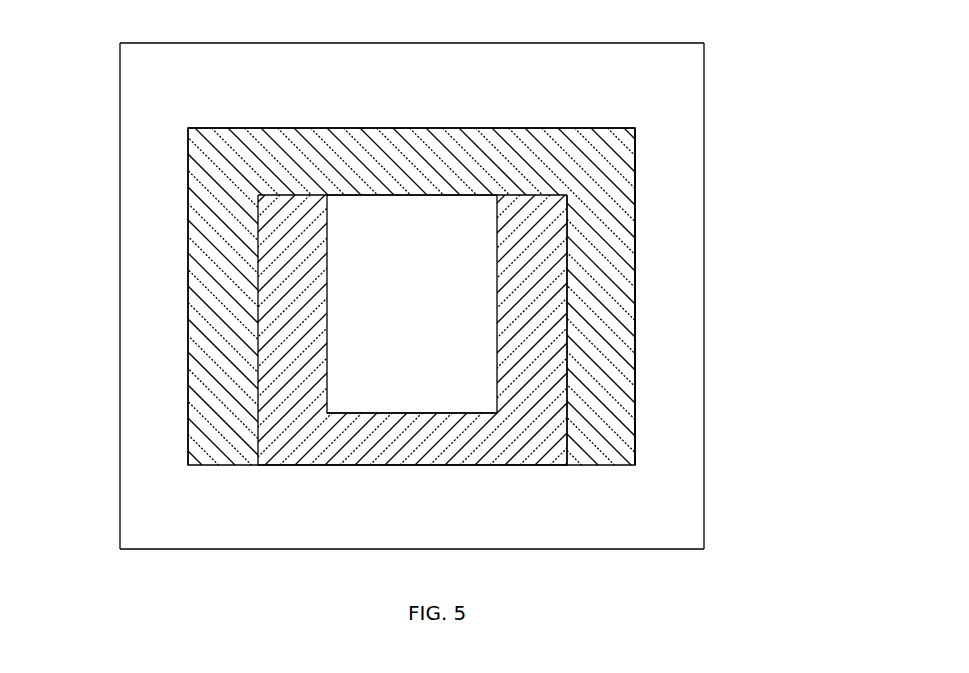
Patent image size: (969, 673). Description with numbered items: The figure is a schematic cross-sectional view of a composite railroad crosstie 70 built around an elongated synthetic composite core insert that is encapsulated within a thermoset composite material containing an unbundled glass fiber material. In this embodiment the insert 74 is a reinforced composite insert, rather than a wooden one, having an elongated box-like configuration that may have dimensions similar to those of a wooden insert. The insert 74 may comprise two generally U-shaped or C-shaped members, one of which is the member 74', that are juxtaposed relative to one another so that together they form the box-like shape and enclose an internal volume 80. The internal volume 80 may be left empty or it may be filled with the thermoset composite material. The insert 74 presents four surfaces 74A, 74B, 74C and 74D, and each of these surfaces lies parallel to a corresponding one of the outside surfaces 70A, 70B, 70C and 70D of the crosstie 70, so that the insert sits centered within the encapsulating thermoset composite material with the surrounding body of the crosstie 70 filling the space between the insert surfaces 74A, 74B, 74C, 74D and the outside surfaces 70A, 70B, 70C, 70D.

The composite railroad crosstie 70 is at (633, 30).
The outside surface 70A is at (120, 355).
The outside surface 70B is at (188, 43).
The outside surface 70C is at (704, 530).
The outside surface 70D is at (188, 549).
The insert 74 is at (480, 335).
The surface 74A is at (188, 213).
The surface 74B is at (480, 127).
The surface 74C is at (637, 440).
The surface 74D is at (297, 465).
The U-shaped or C-shaped member 74' is at (723, 296).
The internal volume 80 is at (472, 225).